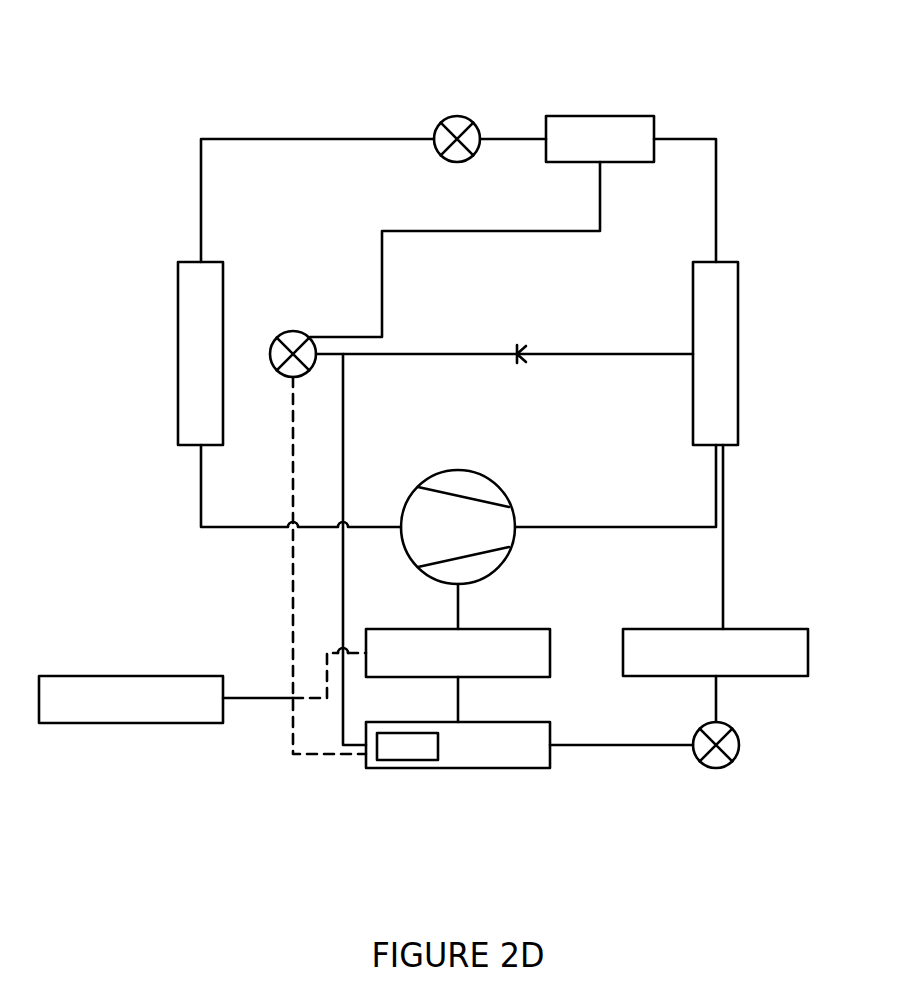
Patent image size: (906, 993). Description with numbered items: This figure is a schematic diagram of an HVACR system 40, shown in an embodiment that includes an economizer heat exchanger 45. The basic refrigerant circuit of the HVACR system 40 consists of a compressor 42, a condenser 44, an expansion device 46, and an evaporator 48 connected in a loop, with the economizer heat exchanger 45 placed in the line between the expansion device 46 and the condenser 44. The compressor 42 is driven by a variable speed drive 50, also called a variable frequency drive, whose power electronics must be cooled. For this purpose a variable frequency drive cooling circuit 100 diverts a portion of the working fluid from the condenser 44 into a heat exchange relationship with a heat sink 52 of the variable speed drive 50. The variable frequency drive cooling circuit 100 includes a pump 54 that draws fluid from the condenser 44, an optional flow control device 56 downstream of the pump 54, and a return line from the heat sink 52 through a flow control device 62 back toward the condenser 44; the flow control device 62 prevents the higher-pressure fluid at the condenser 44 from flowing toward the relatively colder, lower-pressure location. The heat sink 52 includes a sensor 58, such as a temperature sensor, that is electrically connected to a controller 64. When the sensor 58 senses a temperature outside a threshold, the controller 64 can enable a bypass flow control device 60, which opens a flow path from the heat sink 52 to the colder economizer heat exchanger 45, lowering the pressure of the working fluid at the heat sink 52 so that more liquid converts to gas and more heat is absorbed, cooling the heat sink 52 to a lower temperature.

The HVACR system 40 is at (208, 68).
The compressor 42 is at (458, 470).
The condenser 44 is at (715, 353).
The economizer heat exchanger 45 is at (600, 139).
The expansion device 46 is at (457, 116).
The evaporator 48 is at (200, 353).
The variable speed drive 50 is at (458, 653).
The heat sink 52 is at (458, 745).
The pump 54 is at (715, 652).
The flow control device 56 is at (716, 768).
The sensor 58 is at (407, 746).
The bypass flow control device 60 is at (293, 331).
The flow control device 62 is at (527, 334).
The controller 64 is at (131, 699).
The variable frequency drive cooling circuit 100 is at (753, 588).